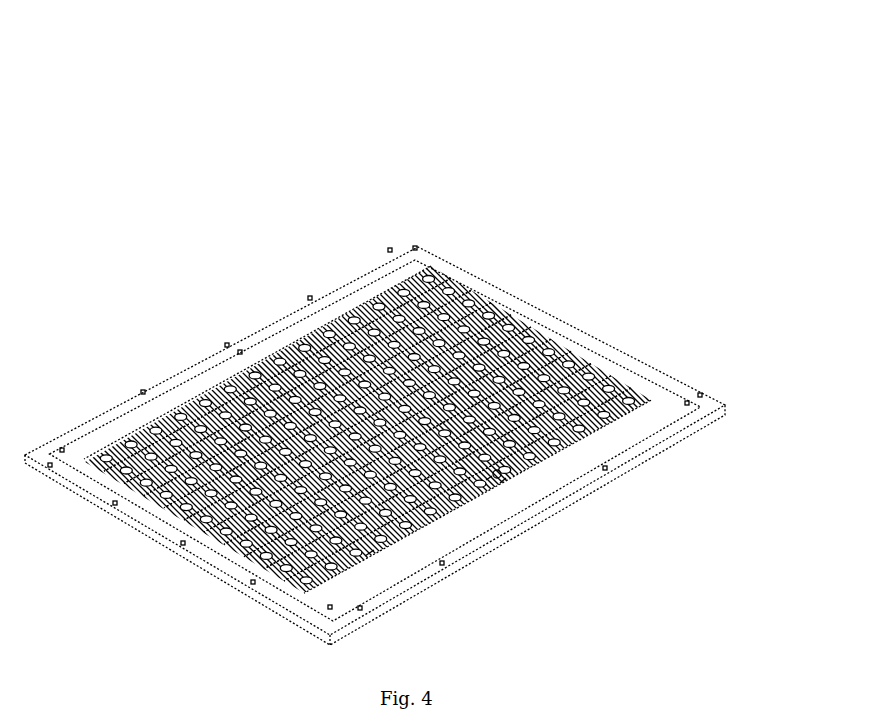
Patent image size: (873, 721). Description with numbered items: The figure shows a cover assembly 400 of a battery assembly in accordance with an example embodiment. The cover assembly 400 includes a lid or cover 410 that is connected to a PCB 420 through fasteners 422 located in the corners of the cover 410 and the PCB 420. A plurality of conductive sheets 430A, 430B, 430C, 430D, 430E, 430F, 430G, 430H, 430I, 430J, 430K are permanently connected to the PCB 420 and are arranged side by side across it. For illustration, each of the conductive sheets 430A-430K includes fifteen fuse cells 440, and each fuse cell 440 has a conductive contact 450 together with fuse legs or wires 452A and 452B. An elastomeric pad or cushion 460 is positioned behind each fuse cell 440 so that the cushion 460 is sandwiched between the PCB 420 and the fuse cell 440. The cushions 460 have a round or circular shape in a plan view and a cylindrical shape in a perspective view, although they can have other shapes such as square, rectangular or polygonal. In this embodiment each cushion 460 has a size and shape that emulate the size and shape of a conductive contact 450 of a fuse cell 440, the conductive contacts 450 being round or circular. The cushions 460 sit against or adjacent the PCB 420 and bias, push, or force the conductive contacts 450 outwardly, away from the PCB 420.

The cover assembly 400 is at (253, 72).
The cover 410 is at (292, 300).
The PCB 420 is at (217, 372).
The fasteners 422 is at (62, 450).
The conductive sheet 430A is at (438, 277).
The conductive sheet 430B is at (460, 287).
The conductive sheet 430C is at (482, 296).
The conductive sheet 430D is at (503, 308).
The conductive sheet 430E is at (527, 320).
The conductive sheet 430F is at (547, 335).
The conductive sheet 430G is at (565, 343).
The conductive sheet 430H is at (585, 362).
The conductive sheet 430I is at (607, 372).
The conductive sheet 430J is at (627, 382).
The conductive sheet 430K is at (645, 397).
The fuse cell 440 is at (172, 405).
The conductive contact 450 is at (496, 477).
The fuse leg 452A is at (490, 479).
The fuse leg 452B is at (503, 481).
The cushion 460 is at (370, 553).